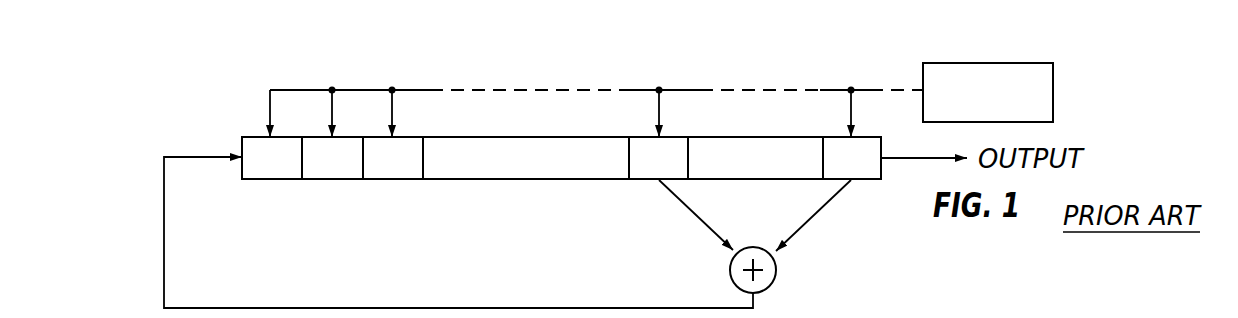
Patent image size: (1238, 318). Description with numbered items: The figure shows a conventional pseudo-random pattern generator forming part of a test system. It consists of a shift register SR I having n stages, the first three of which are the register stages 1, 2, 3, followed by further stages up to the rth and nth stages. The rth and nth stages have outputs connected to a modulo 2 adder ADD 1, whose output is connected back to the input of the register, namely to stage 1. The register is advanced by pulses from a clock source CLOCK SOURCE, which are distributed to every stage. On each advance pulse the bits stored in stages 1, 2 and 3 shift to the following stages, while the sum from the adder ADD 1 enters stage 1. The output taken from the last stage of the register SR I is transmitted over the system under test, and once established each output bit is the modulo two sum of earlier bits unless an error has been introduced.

The shift register SR I is at (561, 174).
The modulo 2 adder ADD 1 is at (776, 266).
The clock source CLOCK SOURCE is at (988, 92).
The first register stage 1 is at (272, 157).
The second register stage 2 is at (331, 157).
The third register stage 3 is at (391, 157).